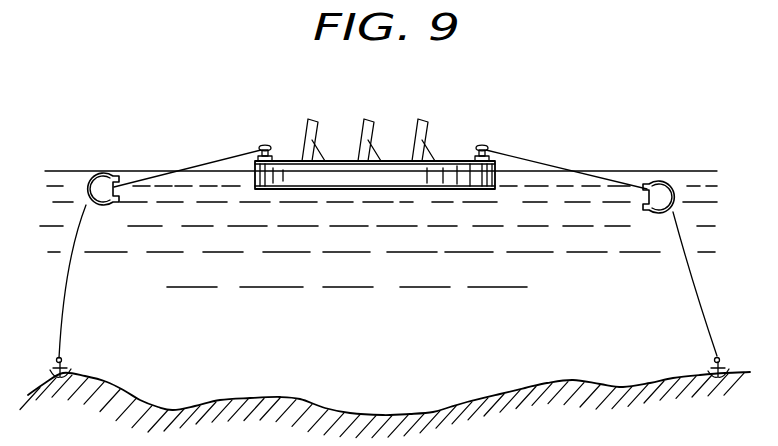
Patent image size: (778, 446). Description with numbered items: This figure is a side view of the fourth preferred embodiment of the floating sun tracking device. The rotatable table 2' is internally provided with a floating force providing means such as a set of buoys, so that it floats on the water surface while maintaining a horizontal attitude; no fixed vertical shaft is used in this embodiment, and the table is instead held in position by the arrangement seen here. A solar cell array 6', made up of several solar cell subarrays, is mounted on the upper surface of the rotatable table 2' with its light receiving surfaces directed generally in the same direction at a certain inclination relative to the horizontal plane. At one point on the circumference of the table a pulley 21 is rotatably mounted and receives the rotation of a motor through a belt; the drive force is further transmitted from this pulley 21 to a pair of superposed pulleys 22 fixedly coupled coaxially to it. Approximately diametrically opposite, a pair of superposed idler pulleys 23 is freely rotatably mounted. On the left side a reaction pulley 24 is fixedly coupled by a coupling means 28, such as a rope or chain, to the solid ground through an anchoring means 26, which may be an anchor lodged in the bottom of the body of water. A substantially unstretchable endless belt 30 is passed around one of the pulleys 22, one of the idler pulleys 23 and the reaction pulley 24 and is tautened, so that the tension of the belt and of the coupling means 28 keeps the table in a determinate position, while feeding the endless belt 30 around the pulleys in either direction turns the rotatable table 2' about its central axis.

The rotatable table 2' is at (375, 146).
The solar cell array 6' is at (368, 119).
The pulley 21 is at (264, 145).
The pulleys 22 is at (670, 257).
The idler pulleys 23 is at (715, 359).
The reaction pulley 24 is at (110, 176).
The anchoring means 26 is at (63, 359).
The coupling means 28 is at (89, 270).
The endless belt 30 is at (203, 163).